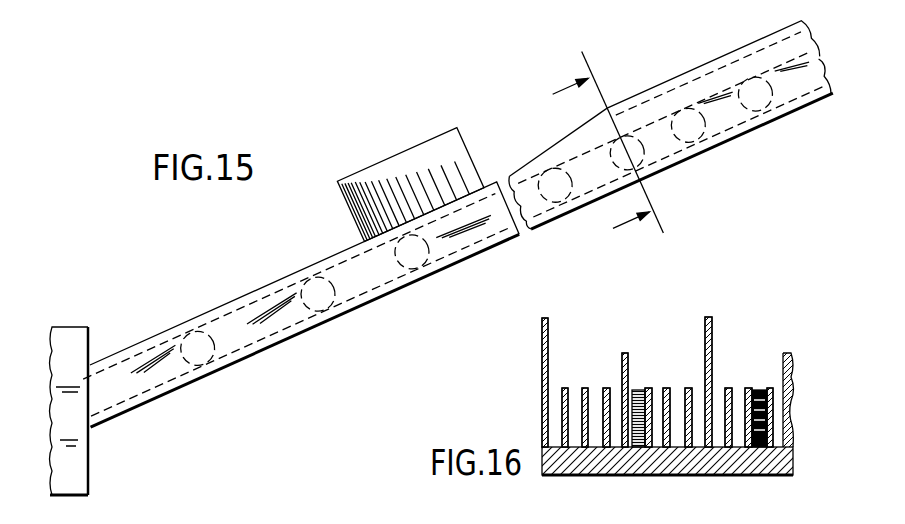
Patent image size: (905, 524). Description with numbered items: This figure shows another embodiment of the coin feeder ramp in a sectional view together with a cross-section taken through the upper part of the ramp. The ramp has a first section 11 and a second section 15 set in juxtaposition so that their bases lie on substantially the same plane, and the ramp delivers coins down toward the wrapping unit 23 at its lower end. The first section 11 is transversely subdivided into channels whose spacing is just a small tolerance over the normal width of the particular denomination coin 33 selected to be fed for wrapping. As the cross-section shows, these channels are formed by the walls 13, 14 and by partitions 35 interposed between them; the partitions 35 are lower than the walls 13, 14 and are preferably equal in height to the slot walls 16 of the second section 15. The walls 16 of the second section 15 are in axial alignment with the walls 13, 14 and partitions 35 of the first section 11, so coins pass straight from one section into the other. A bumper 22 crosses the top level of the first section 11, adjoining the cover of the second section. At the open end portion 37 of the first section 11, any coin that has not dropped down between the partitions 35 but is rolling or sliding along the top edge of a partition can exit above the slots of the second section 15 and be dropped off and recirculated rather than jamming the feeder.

In FIG. 15, the first section 11 is at (730, 147).
In FIG. 16, the first section 11 is at (517, 390).
In FIG. 15, the wall 13 is at (640, 100).
In FIG. 16, the wall 13 is at (542, 348).
In FIG. 15, the wall 14 is at (713, 72).
In FIG. 16, the wall 14 is at (628, 375).
In FIG. 15, the second section 15 is at (267, 365).
In FIG. 15, the slot walls 16 is at (535, 166).
In FIG. 15, the bumper 22 is at (365, 155).
In FIG. 15, the wrapping unit 23 is at (67, 338).
In FIG. 15, the coin 33 is at (312, 288).
In FIG. 16, the coin 33 is at (638, 388).
In FIG. 15, the partitions 35 is at (767, 63).
In FIG. 16, the partitions 35 is at (570, 392).
In FIG. 15, the open end portion 37 is at (610, 112).